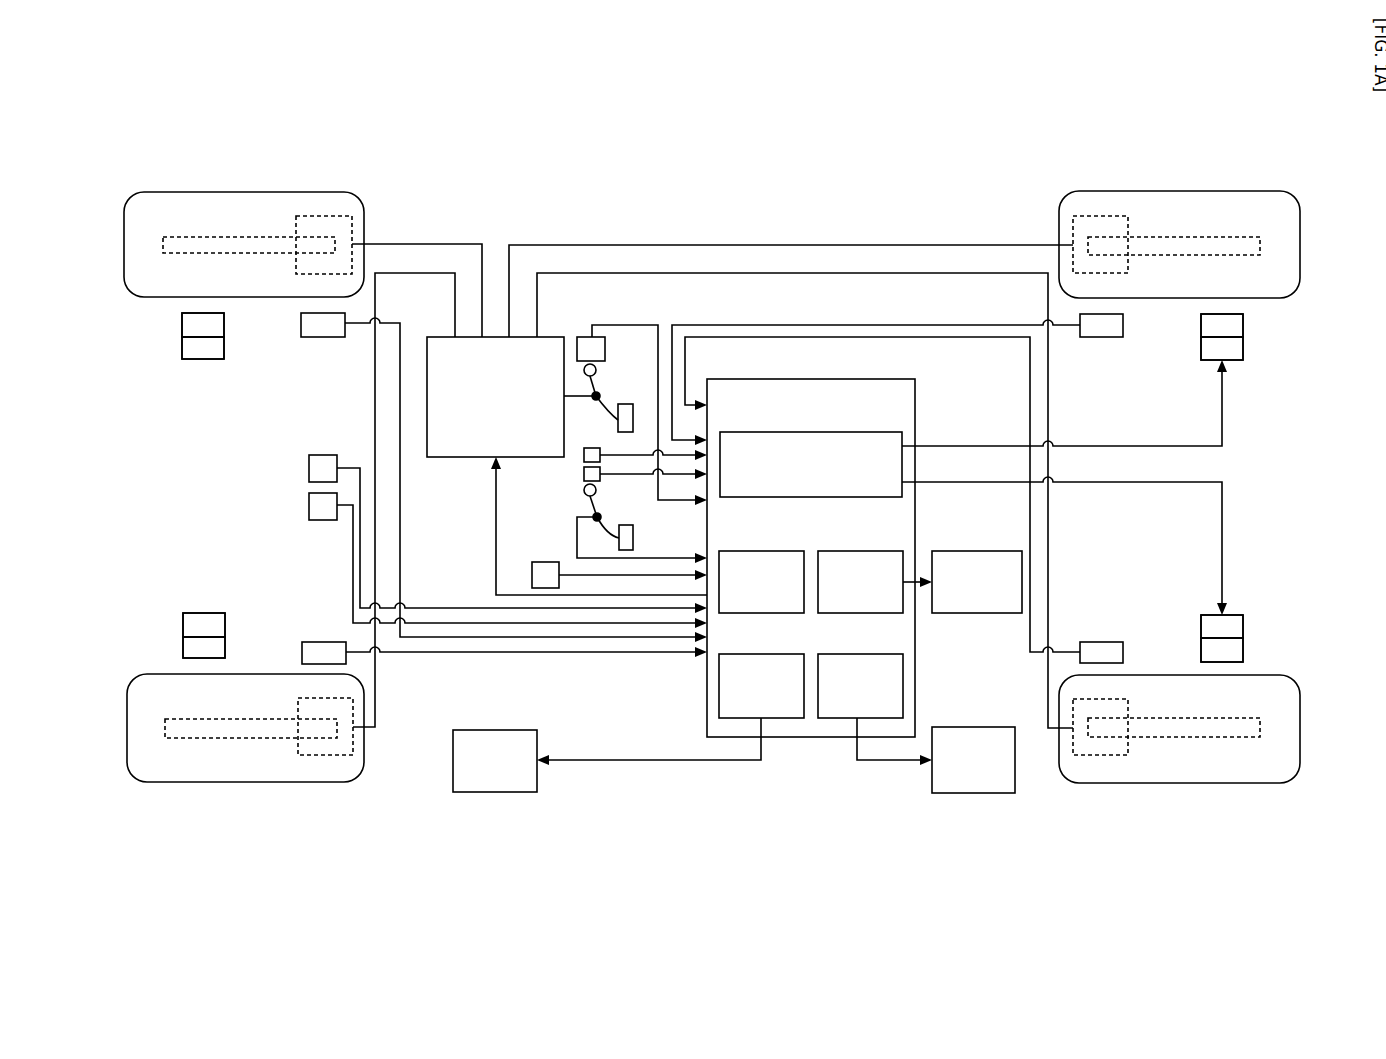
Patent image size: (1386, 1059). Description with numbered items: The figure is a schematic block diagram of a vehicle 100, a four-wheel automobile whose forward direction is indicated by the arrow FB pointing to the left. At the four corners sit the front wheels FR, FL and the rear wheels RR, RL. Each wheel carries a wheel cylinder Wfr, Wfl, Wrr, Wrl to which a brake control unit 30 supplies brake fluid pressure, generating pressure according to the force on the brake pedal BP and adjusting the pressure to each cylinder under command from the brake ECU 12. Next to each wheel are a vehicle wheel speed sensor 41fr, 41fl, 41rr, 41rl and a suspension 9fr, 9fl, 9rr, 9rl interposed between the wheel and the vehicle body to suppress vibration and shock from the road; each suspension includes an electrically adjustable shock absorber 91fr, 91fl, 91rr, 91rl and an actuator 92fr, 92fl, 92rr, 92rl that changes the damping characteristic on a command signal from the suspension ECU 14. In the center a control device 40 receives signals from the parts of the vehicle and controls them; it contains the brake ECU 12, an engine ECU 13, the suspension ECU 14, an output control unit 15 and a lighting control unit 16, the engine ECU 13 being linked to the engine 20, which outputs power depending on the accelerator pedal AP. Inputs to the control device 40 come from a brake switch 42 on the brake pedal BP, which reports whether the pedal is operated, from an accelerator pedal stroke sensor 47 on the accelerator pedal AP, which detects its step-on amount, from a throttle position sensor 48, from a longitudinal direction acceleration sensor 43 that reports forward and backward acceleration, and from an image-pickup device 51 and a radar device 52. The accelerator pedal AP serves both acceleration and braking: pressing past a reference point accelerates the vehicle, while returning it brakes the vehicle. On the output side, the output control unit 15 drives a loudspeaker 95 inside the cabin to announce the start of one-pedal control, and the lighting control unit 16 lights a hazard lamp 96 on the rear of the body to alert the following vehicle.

The vehicle 100 is at (762, 164).
The brake control unit 30 is at (553, 337).
The control device 40 is at (864, 379).
The suspension ECU 14 is at (866, 432).
The brake ECU 12 is at (764, 551).
The engine ECU 13 is at (864, 551).
The output control unit 15 is at (764, 654).
The lighting control unit 16 is at (864, 654).
The engine 20 is at (988, 551).
The brake switch 42 is at (605, 352).
The brake pedal BP is at (596, 389).
The accelerator pedal stroke sensor 47 is at (584, 474).
The throttle position sensor 48 is at (588, 448).
The accelerator pedal AP is at (608, 528).
The longitudinal direction acceleration sensor 43 is at (540, 562).
The image-pickup device 51 is at (309, 468).
The radar device 52 is at (309, 506).
The loudspeaker 95 is at (469, 792).
The hazard lamp 96 is at (929, 786).
The suspension 9fr is at (118, 318).
The shock absorber 91fr is at (182, 325).
The actuator 92fr is at (182, 348).
The vehicle wheel speed sensor 41fr is at (301, 325).
The suspension 9fl is at (118, 618).
The shock absorber 91fl is at (183, 650).
The actuator 92fl is at (183, 626).
The vehicle wheel speed sensor 41fl is at (302, 653).
The suspension 9rr is at (1315, 320).
The shock absorber 91rr is at (1244, 326).
The actuator 92rr is at (1244, 349).
The vehicle wheel speed sensor 41rr is at (1124, 326).
The suspension 9rl is at (1315, 622).
The shock absorber 91rl is at (1244, 652).
The actuator 92rl is at (1244, 628).
The vehicle wheel speed sensor 41rl is at (1124, 654).
The front right wheel FR is at (243, 191).
The wheel cylinder Wfr is at (325, 214).
The front left wheel FL is at (240, 785).
The wheel cylinder Wfl is at (320, 757).
The rear right wheel RR is at (1188, 191).
The wheel cylinder Wrr is at (1105, 214).
The rear left wheel RL is at (1183, 785).
The wheel cylinder Wrl is at (1100, 757).
The arrow indicating forward direction FB is at (837, 853).